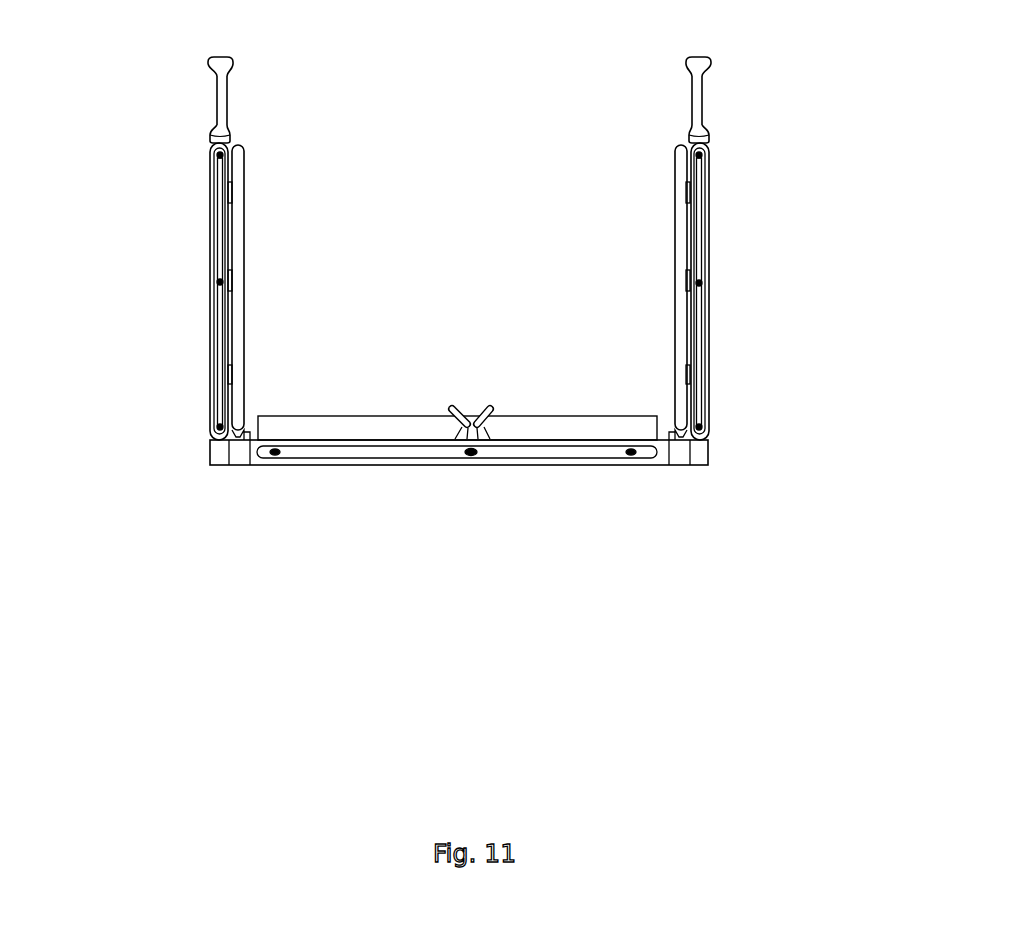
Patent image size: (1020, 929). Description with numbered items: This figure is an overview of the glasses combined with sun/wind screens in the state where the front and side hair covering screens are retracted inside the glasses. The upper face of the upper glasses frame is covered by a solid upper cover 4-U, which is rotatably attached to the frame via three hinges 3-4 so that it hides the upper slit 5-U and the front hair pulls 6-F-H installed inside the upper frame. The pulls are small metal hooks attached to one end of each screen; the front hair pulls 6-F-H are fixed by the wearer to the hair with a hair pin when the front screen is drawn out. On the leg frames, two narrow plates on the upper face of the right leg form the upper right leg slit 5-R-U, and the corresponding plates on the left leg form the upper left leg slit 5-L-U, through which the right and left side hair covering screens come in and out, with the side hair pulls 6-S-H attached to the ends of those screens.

The side hair pulls 6-S-H is at (220, 282).
The upper right leg slit 5-R-U is at (228, 212).
The upper slit 5-U is at (360, 451).
The upper cover 4-U is at (518, 432).
The hinges 3-4 is at (684, 193).
The upper left leg slit 5-L-U is at (701, 183).
The front hair pulls 6-F-H is at (472, 456).